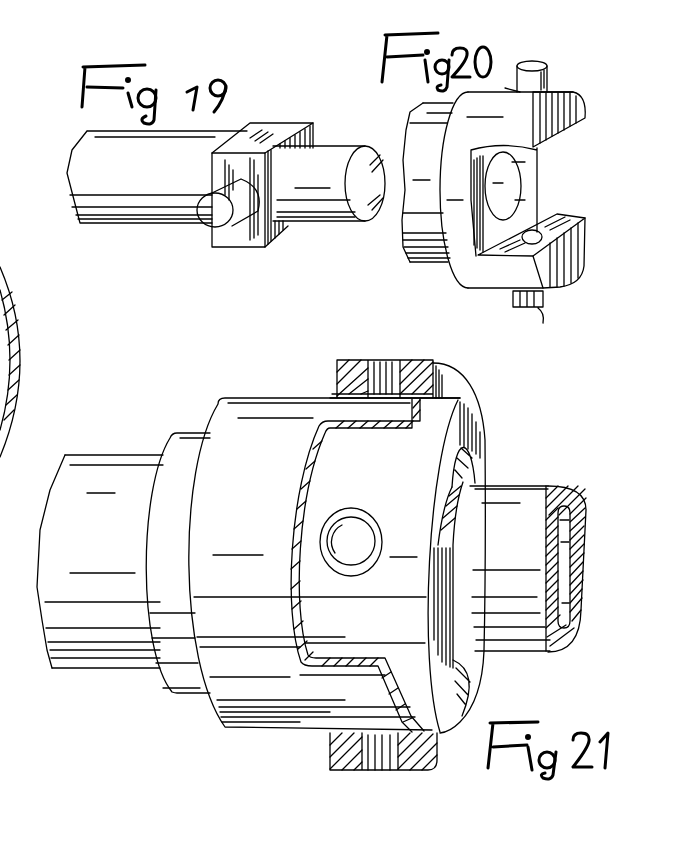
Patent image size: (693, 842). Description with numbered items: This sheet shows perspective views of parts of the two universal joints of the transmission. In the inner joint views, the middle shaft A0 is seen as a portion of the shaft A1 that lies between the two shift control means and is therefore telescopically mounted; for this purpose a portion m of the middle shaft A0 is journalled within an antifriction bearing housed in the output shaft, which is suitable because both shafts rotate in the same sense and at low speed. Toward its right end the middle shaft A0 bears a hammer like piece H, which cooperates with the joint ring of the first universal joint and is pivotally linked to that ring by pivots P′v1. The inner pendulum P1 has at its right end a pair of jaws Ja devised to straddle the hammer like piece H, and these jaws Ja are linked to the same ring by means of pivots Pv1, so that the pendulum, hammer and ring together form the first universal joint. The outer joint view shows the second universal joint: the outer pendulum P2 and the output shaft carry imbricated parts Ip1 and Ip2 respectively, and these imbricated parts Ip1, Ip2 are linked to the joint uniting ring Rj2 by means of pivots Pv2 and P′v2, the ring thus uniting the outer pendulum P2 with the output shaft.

In FIG. 19, the middle shaft A0 is at (115, 213).
In FIG. 19, the pivots P′v1 is at (213, 213).
In FIG. 19, the hammer like piece H is at (257, 247).
In FIG. 19, the portion of the shaft m is at (333, 160).
In FIG. 20, the pivots Pv1 is at (545, 80).
In FIG. 20, the jaws Ja is at (570, 102).
In FIG. 20, the inner pendulum P1 is at (410, 247).
In FIG. 21, the outer pendulum P2 is at (88, 482).
In FIG. 21, the imbricated part Ip2 is at (283, 757).
In FIG. 21, the pivots Pv2 is at (380, 370).
In FIG. 21, the joint uniting ring Rj2 is at (445, 383).
In FIG. 21, the pivots P′v2 is at (348, 537).
In FIG. 21, the shaft A1 is at (522, 497).
In FIG. 21, the imbricated part Ip1 is at (342, 630).